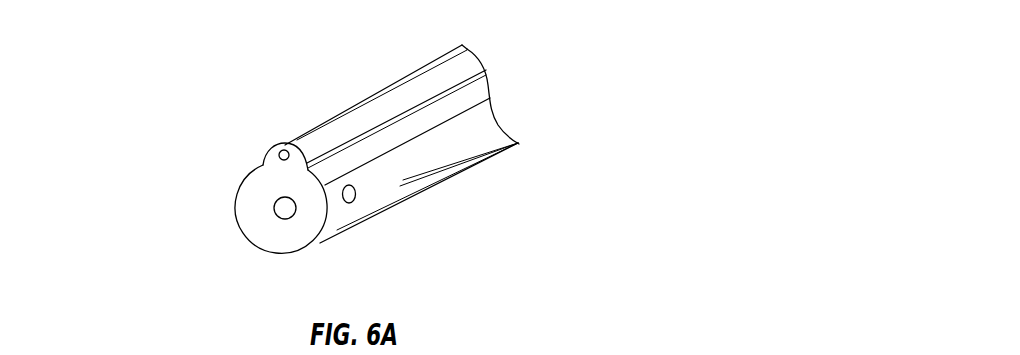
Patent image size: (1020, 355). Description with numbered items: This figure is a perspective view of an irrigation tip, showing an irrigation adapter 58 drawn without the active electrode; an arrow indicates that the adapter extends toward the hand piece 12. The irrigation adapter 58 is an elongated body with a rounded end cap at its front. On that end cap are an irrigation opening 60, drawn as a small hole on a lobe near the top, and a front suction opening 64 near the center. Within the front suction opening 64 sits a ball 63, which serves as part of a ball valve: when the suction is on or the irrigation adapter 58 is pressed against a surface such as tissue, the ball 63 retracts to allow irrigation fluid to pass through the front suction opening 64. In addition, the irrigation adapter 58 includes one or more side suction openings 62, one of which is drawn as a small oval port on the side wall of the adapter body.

The hand piece 12 is at (508, 83).
The irrigation adapter 58 is at (395, 84).
The irrigation opening 60 is at (279, 156).
The side suction opening 62 is at (355, 196).
The ball 63 is at (282, 208).
The front suction opening 64 is at (277, 220).